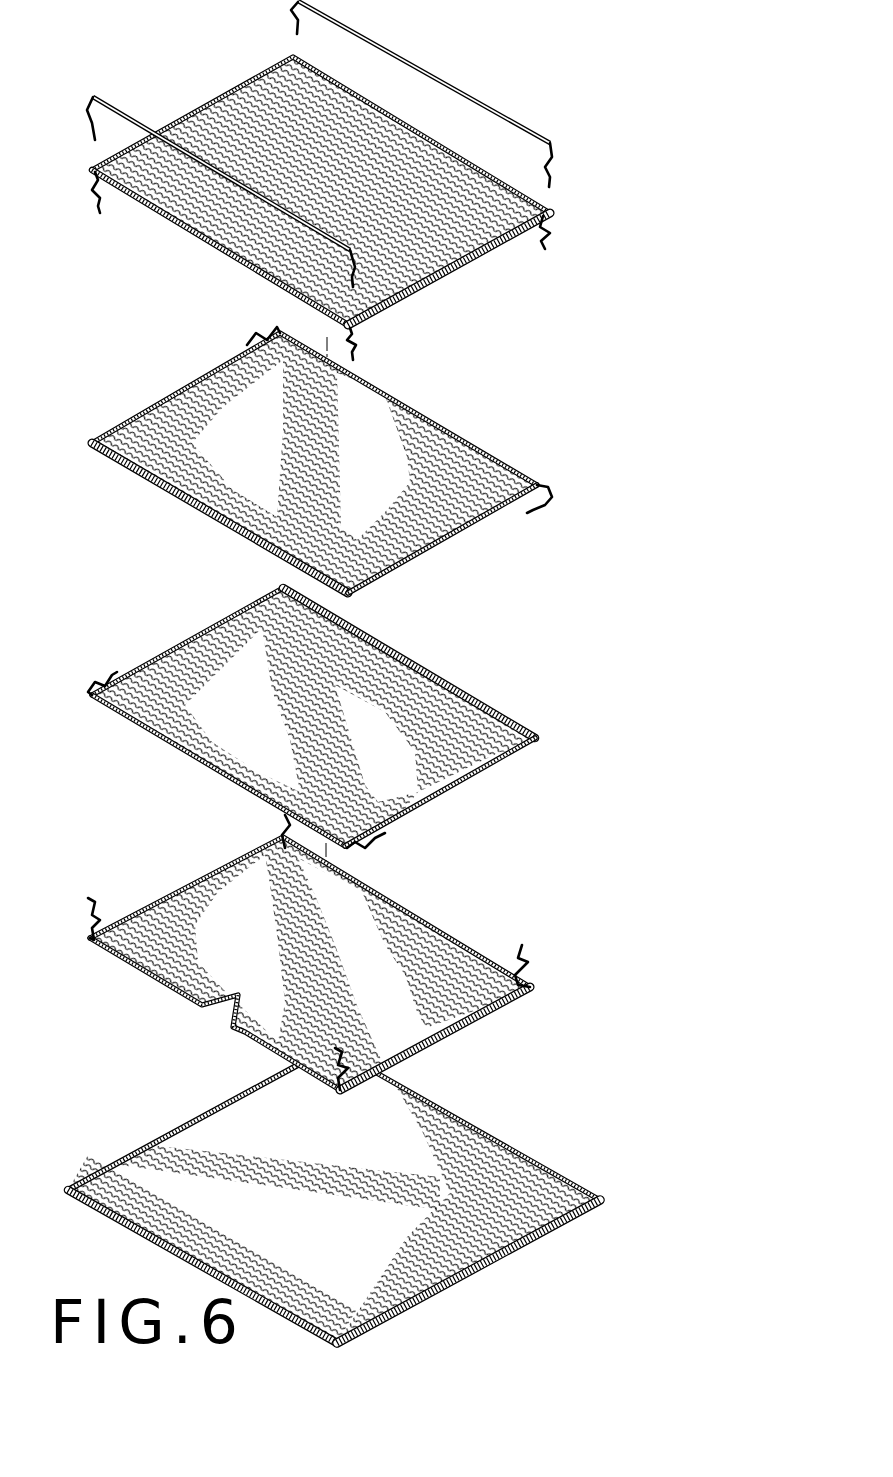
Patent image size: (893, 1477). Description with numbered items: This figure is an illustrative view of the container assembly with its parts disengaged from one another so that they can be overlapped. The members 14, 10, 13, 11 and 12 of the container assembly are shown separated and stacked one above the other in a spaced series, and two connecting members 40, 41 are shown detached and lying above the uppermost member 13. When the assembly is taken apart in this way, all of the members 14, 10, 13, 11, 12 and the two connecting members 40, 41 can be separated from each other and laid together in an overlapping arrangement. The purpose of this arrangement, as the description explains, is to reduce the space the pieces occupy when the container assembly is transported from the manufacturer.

The member 10 is at (385, 932).
The member 11 is at (438, 782).
The member 12 is at (437, 538).
The member 13 is at (438, 250).
The member 14 is at (420, 1130).
The connecting member 40 is at (452, 89).
The connecting member 41 is at (147, 128).